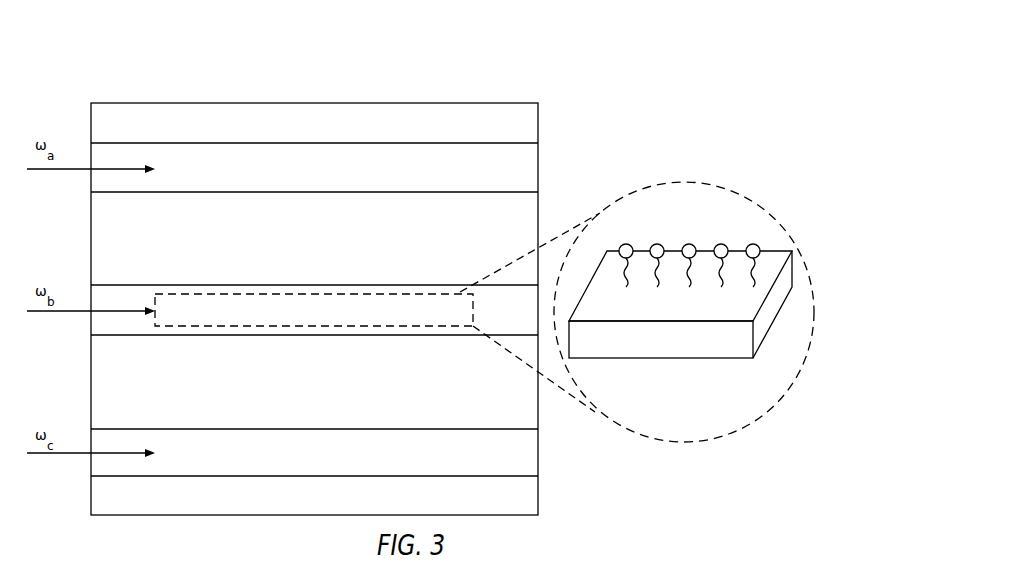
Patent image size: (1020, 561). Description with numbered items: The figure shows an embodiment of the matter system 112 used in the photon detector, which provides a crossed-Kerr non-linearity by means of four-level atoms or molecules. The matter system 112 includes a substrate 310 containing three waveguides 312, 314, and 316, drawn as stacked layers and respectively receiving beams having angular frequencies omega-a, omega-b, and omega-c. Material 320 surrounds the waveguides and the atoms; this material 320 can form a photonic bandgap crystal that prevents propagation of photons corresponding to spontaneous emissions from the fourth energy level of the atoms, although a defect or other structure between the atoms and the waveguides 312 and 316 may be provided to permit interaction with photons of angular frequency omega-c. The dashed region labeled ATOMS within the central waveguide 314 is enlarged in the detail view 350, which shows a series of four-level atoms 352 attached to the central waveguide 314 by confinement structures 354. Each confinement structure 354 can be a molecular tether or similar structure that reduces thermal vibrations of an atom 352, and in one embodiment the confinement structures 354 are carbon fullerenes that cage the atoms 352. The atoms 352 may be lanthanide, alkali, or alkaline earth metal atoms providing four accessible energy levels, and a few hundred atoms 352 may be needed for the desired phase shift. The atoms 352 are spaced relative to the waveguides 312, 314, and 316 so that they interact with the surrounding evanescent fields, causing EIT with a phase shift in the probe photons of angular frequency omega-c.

The matter system 112 is at (607, 150).
The substrate 310 is at (153, 133).
The waveguide 312 is at (217, 177).
The central waveguide 314 is at (185, 285).
The waveguide 316 is at (217, 462).
The material 320 is at (328, 247).
The enlarged detail view 350 is at (679, 181).
The four-level atoms 352 is at (627, 241).
The confinement structures 354 is at (623, 269).